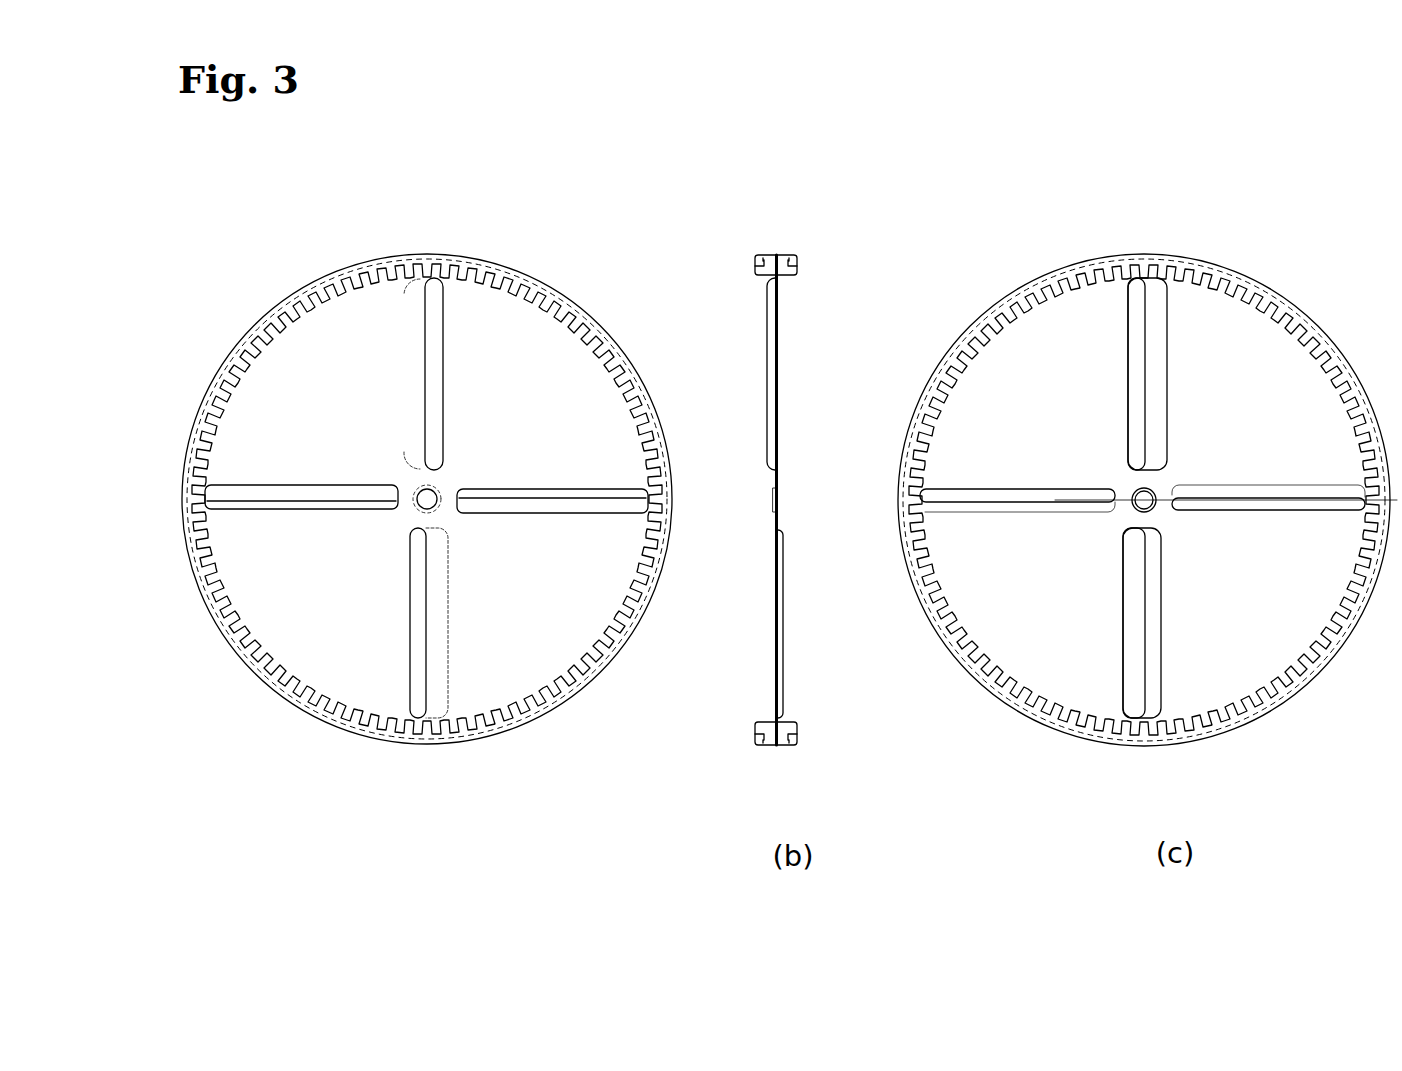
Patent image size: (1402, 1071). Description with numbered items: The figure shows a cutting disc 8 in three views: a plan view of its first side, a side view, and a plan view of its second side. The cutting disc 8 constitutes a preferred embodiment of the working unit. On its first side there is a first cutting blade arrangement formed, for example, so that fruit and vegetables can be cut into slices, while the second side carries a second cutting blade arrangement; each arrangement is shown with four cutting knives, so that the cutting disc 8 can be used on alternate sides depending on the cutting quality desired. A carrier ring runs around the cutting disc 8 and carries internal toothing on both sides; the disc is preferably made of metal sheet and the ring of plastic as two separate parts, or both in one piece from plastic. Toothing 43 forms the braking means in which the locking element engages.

The cutting disc 8 is at (443, 194).
The toothing 43 is at (462, 255).